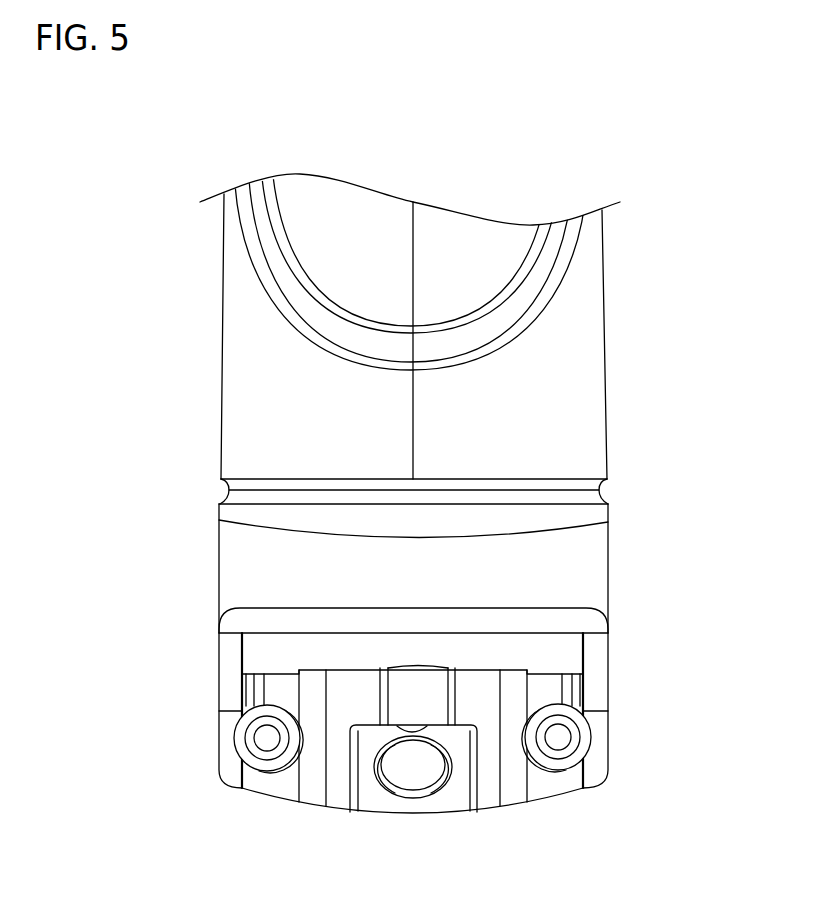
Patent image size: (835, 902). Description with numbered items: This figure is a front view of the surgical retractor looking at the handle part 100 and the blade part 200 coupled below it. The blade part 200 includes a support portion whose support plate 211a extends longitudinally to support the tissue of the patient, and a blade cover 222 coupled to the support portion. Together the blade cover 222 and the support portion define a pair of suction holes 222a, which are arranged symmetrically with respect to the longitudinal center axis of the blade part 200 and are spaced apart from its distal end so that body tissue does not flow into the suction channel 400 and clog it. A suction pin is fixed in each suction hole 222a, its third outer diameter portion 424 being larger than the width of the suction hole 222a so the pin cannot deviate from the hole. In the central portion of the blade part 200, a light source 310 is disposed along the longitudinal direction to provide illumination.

The handle part 100 is at (196, 366).
The blade part 200 is at (194, 539).
The support plate 211a is at (518, 652).
The blade cover 222 is at (515, 687).
The suction hole 222a is at (279, 691).
The suction channel 400 is at (390, 791).
The third outer diameter portion 424 is at (267, 758).
The light source 310 is at (415, 770).